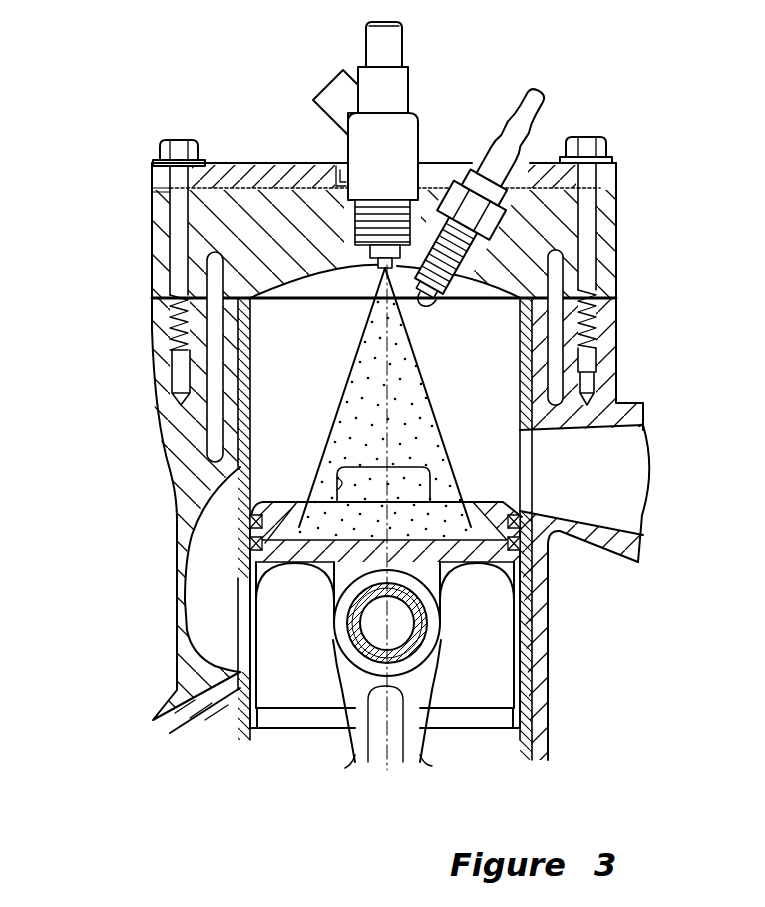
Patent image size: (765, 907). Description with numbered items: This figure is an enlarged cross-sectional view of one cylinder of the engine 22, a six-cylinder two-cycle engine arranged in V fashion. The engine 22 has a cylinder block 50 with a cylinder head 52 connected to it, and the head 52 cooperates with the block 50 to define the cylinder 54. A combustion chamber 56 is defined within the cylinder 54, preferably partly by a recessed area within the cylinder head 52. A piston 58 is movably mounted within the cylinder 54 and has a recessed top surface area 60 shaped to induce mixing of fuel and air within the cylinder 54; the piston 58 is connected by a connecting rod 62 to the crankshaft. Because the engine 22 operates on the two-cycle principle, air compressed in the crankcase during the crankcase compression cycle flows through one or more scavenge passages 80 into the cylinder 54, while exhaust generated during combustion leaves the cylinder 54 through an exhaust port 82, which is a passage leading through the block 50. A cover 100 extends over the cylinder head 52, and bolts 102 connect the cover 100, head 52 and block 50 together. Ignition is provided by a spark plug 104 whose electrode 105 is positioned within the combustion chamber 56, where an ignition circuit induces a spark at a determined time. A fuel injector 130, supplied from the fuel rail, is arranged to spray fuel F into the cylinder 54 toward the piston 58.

The engine 22 is at (158, 500).
The cylinder block 50 is at (617, 378).
The cylinder head 52 is at (153, 255).
The cylinder 54 is at (252, 421).
The combustion chamber 56 is at (330, 282).
The piston 58 is at (289, 733).
The recessed top surface area 60 is at (379, 604).
The connecting rod 62 is at (360, 743).
The scavenge passage 80 is at (338, 478).
The exhaust port 82 is at (583, 516).
The cover 100 is at (153, 178).
The bolt 102 is at (178, 138).
The spark plug 104 is at (492, 143).
The electrode 105 is at (427, 295).
The fuel injector 130 is at (410, 82).
The fuel F is at (386, 403).